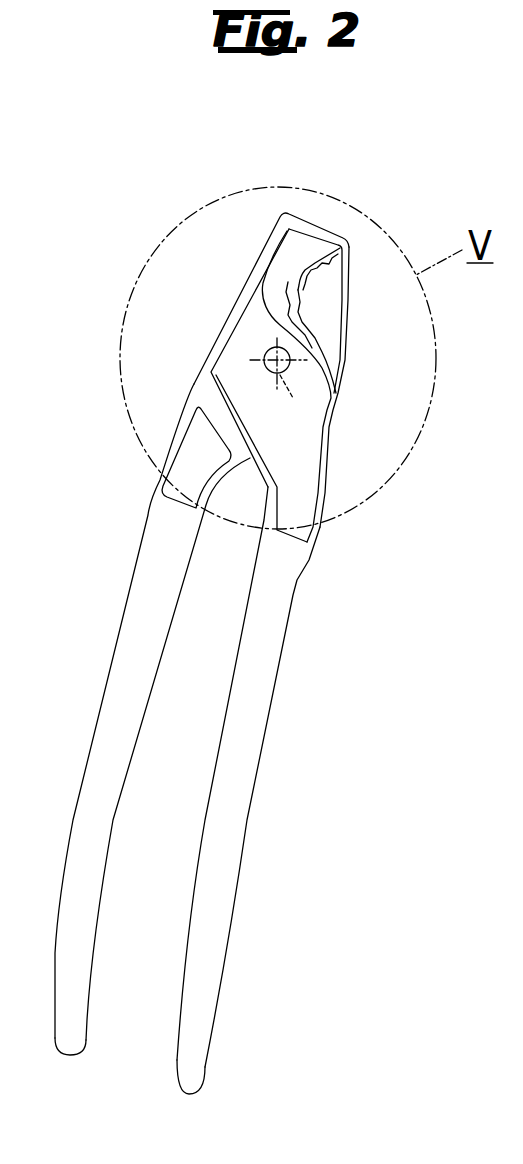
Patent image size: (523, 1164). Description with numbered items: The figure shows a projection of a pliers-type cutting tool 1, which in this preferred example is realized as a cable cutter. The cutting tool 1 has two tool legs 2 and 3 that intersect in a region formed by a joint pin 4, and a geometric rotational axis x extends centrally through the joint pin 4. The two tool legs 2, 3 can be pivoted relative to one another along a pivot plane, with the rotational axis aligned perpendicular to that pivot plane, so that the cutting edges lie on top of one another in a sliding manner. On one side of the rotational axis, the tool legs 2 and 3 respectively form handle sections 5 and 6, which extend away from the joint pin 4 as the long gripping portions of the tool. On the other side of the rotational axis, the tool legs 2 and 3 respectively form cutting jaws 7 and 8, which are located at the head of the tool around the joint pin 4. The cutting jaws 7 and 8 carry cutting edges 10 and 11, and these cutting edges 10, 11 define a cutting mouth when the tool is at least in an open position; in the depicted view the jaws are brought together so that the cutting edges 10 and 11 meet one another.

The pliers-type cutting tool 1 is at (104, 293).
The tool leg 2 is at (253, 712).
The tool leg 3 is at (135, 663).
The joint pin 4 is at (291, 364).
The handle section 5 is at (208, 925).
The handle section 6 is at (83, 905).
The cutting jaw 7 is at (247, 323).
The cutting jaw 8 is at (330, 335).
The cutting edge 10 is at (298, 280).
The cutting edge 11 is at (318, 298).